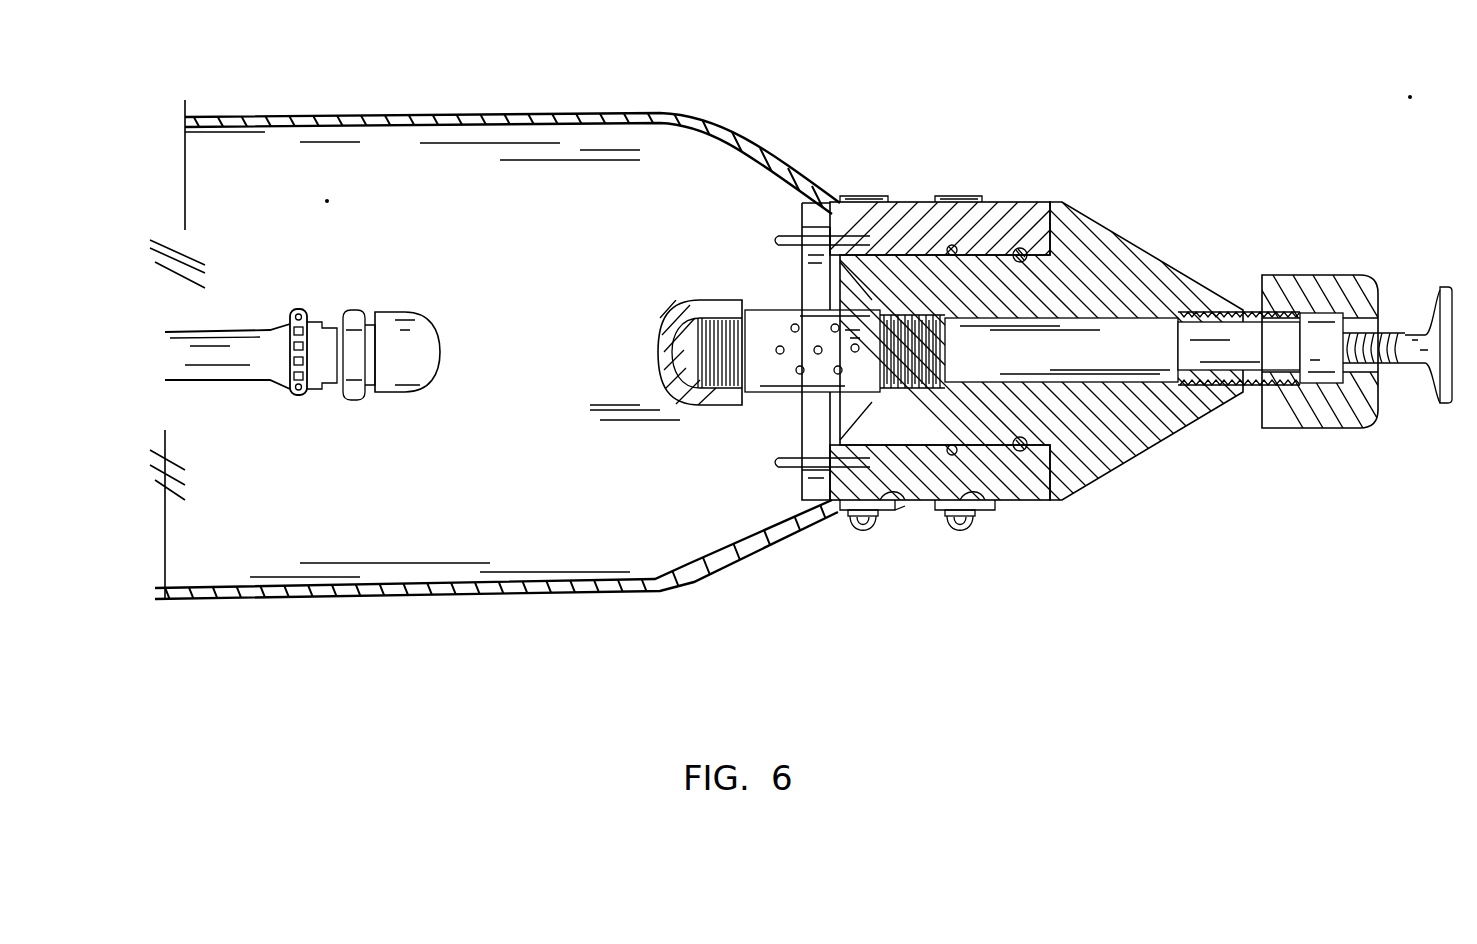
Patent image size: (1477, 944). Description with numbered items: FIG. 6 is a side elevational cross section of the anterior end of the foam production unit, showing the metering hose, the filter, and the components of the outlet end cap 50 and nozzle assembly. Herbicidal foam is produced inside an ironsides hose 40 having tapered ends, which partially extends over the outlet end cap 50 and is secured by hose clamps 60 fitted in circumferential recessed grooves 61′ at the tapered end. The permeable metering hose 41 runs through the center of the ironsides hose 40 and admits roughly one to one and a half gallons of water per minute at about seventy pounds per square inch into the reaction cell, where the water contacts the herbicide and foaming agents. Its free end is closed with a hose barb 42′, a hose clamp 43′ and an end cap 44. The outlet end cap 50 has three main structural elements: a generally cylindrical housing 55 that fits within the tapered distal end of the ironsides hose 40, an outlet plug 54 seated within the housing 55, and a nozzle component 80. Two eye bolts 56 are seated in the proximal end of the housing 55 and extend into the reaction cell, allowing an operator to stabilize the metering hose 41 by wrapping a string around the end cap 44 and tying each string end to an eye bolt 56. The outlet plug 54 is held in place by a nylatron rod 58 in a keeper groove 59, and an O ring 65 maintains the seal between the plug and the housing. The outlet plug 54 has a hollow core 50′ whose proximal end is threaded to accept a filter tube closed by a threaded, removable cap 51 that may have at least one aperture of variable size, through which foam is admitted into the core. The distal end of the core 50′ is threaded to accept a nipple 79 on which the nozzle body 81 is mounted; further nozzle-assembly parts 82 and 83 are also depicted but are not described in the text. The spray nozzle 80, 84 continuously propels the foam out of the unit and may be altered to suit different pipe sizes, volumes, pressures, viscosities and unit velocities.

The ironsides hose 40 is at (225, 605).
The metering hose 41 is at (205, 385).
The hose barb 42′ is at (352, 402).
The hose clamp 43′ is at (297, 397).
The end cap 44 is at (422, 360).
The outlet end cap 50 is at (1250, 94).
The hollow core 50′ is at (1140, 355).
The filter tube cap 51 is at (680, 405).
The outlet plug 54 is at (1115, 455).
The housing piece 55 is at (1030, 500).
The eye bolts 56 is at (790, 233).
The nylatron rod 58 is at (1040, 262).
The keeper groove 59 is at (1030, 263).
The hose clamps 60 is at (865, 535).
The recessed grooves 61′ is at (893, 502).
The O ring 65 is at (948, 245).
The nipple 79 is at (1210, 388).
The nozzle component 80 is at (1450, 260).
The nozzle body 81 is at (1295, 430).
The nut 82 is at (1330, 385).
The screw 83 is at (1395, 365).
The spray nozzle 84 is at (1425, 385).